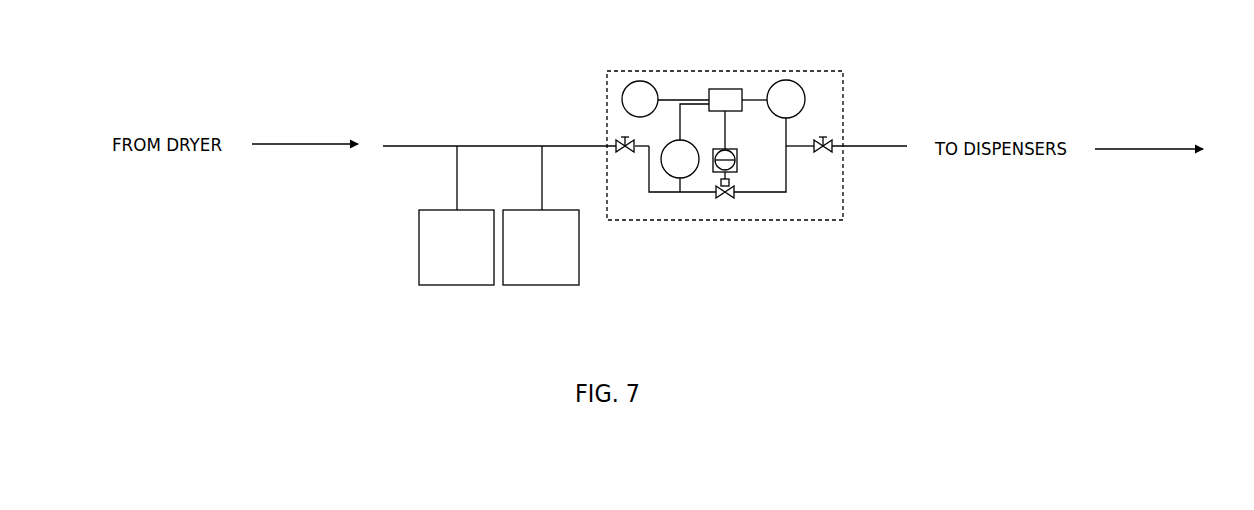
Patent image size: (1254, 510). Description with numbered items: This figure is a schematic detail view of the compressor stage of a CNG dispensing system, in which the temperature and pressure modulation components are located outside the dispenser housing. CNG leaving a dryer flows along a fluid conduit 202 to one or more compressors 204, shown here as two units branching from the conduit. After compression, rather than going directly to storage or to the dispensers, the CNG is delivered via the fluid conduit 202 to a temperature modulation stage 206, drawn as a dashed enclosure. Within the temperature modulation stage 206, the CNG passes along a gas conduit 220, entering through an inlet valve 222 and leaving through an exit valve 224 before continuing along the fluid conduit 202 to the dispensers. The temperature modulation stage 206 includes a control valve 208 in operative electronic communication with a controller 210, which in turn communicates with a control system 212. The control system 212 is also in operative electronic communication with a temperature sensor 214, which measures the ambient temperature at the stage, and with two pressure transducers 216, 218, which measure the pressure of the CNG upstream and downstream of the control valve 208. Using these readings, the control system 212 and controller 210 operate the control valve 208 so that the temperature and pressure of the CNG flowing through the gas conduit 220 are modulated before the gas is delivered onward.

The fluid conduit 202 is at (413, 146).
The compressor 204 is at (460, 266).
The temperature modulation stage 206 is at (836, 69).
The control valve 208 is at (725, 200).
The controller 210 is at (737, 152).
The control system 212 is at (723, 89).
The temperature sensor 214 is at (643, 81).
The pressure transducer 216 is at (670, 170).
The pressure transducer 218 is at (805, 99).
The gas conduit 220 is at (785, 175).
The inlet valve 222 is at (622, 130).
The exit valve 224 is at (833, 130).